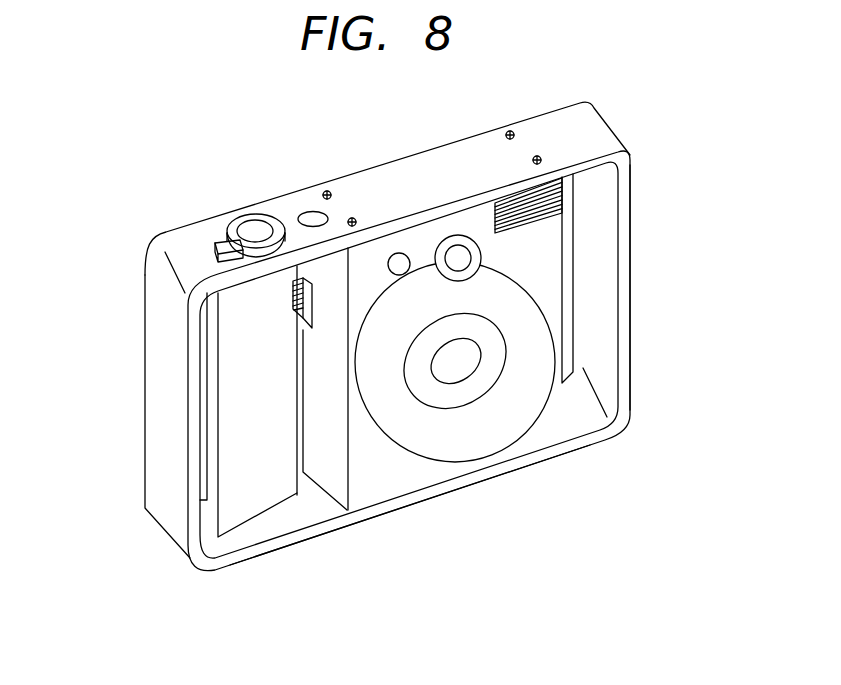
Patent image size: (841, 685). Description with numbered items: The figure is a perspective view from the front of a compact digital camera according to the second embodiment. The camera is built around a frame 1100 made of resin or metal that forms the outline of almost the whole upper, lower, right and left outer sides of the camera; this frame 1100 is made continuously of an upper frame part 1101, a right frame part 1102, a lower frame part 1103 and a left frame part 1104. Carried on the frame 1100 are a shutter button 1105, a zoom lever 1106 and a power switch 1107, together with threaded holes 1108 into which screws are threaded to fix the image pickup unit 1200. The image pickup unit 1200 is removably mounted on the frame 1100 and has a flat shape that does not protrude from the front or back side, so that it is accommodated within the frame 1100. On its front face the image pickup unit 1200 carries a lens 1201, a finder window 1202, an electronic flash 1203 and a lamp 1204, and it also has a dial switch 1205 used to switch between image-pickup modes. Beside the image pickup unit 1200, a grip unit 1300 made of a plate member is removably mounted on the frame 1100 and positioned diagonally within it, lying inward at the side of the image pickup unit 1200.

The frame 1100 is at (608, 127).
The upper frame part 1101 is at (548, 137).
The right frame part 1102 is at (626, 336).
The lower frame part 1103 is at (583, 443).
The left frame part 1104 is at (170, 432).
The shutter button 1105 is at (255, 228).
The zoom lever 1106 is at (230, 226).
The power switch 1107 is at (312, 215).
The threaded hole 1108 is at (533, 160).
The image pickup unit 1200 is at (568, 282).
The lens 1201 is at (458, 373).
The finder window 1202 is at (465, 256).
The electronic flash 1203 is at (497, 236).
The lamp 1204 is at (398, 275).
The dial switch 1205 is at (312, 285).
The grip unit 1300 is at (263, 495).